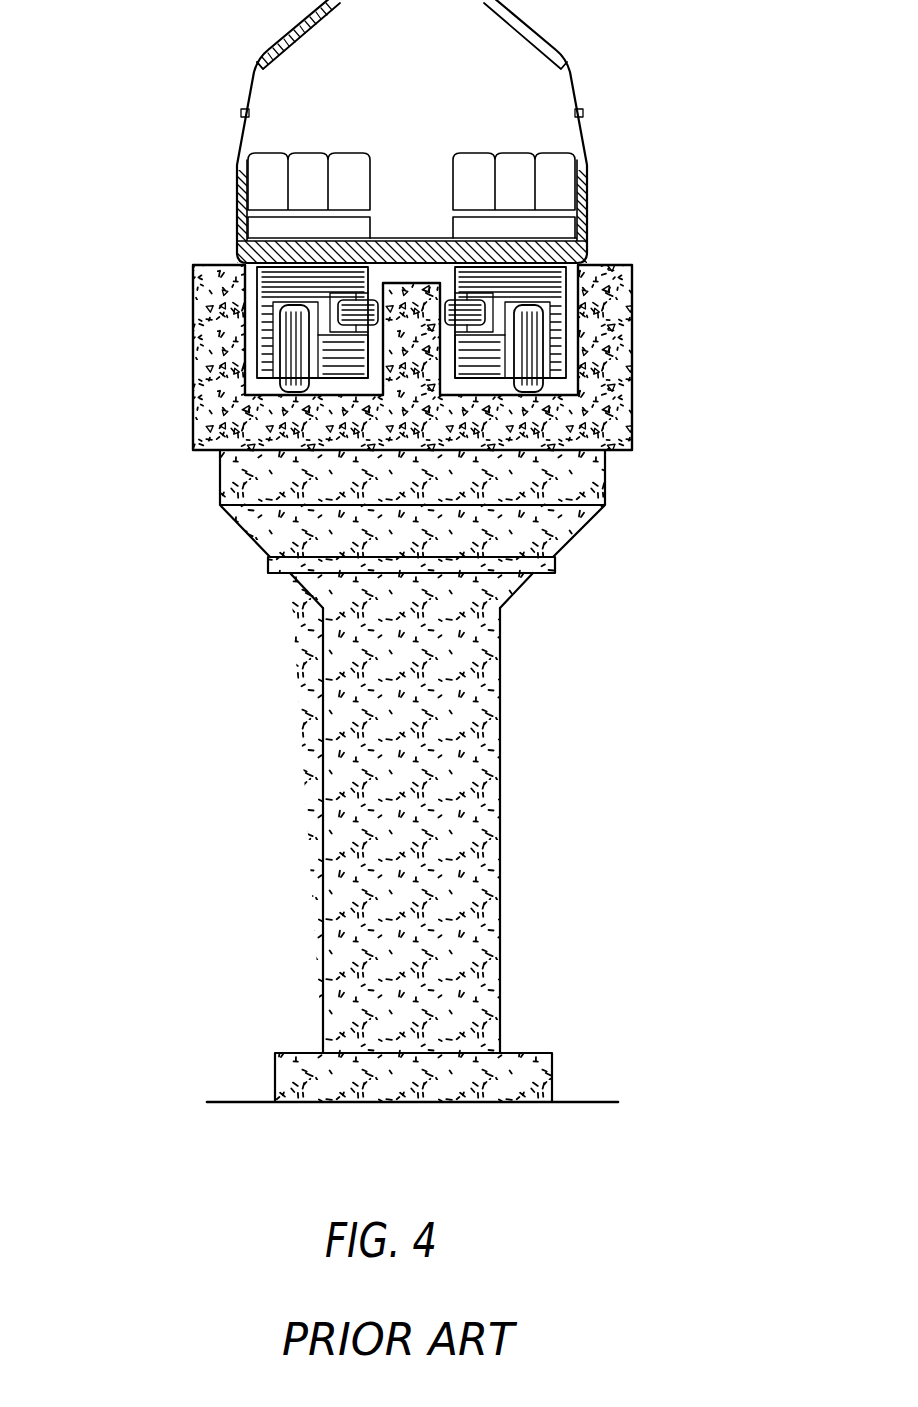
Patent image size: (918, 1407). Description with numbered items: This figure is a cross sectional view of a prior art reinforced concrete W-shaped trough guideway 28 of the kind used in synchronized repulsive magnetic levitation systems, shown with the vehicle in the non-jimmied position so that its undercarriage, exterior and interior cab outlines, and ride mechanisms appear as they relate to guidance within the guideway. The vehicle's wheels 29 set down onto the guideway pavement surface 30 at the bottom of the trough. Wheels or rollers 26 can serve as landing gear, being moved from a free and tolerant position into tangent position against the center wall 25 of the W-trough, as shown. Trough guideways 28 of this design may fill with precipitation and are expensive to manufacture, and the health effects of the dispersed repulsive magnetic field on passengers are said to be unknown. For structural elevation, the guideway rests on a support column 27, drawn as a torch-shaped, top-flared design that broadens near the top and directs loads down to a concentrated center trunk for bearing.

The center wall 25 is at (452, 290).
The wheels or rollers 26 is at (473, 297).
The support column 27 is at (420, 842).
The W-shaped trough guideway 28 is at (210, 390).
The wheels 29 is at (275, 323).
The guideway pavement surface 30 is at (343, 393).